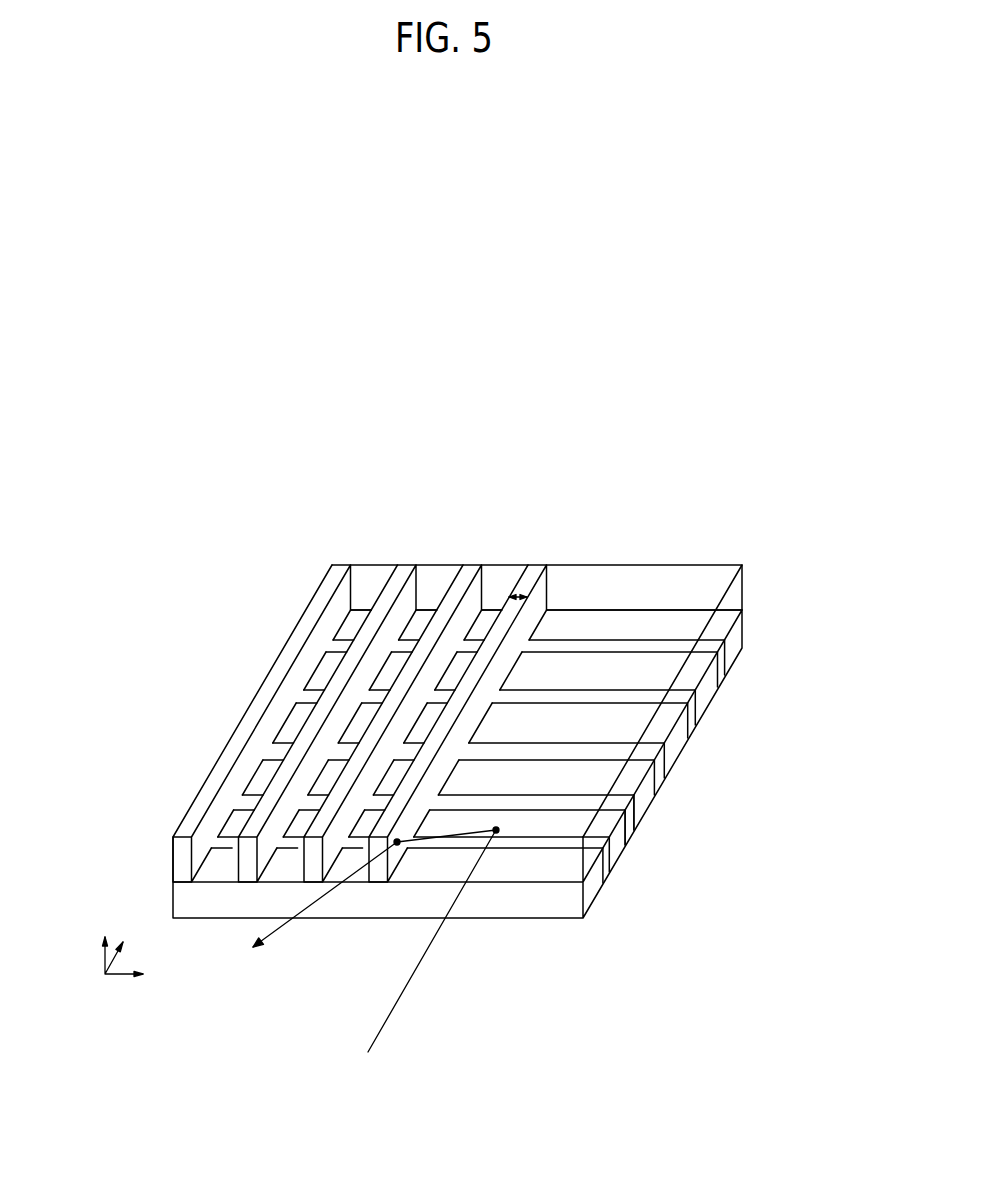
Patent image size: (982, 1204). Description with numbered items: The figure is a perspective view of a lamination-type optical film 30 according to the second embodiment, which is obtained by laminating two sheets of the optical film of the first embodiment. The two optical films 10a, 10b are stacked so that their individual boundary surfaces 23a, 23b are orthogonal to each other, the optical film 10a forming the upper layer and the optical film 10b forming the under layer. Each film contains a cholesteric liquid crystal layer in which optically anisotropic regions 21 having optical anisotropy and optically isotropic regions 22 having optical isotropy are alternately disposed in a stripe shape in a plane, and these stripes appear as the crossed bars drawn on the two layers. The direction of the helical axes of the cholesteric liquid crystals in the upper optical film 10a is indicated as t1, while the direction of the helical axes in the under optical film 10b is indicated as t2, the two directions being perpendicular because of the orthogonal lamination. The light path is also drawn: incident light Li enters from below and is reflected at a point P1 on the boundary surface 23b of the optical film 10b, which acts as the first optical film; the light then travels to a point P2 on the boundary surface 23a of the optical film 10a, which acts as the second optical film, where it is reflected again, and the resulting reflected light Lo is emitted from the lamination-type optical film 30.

The lamination-type optical film 30 is at (770, 484).
The optical film 10a is at (746, 589).
The optical film 10b is at (746, 623).
The optically anisotropic region 21 is at (280, 664).
The optically isotropic region 22 is at (373, 572).
The boundary surface 23a is at (540, 601).
The boundary surface 23b is at (598, 838).
The direction of helical axes t1 is at (514, 596).
The direction of helical axes t2 is at (578, 806).
The point P1 is at (498, 835).
The point P2 is at (398, 845).
The incident light Li is at (432, 946).
The reflected light Lo is at (325, 907).